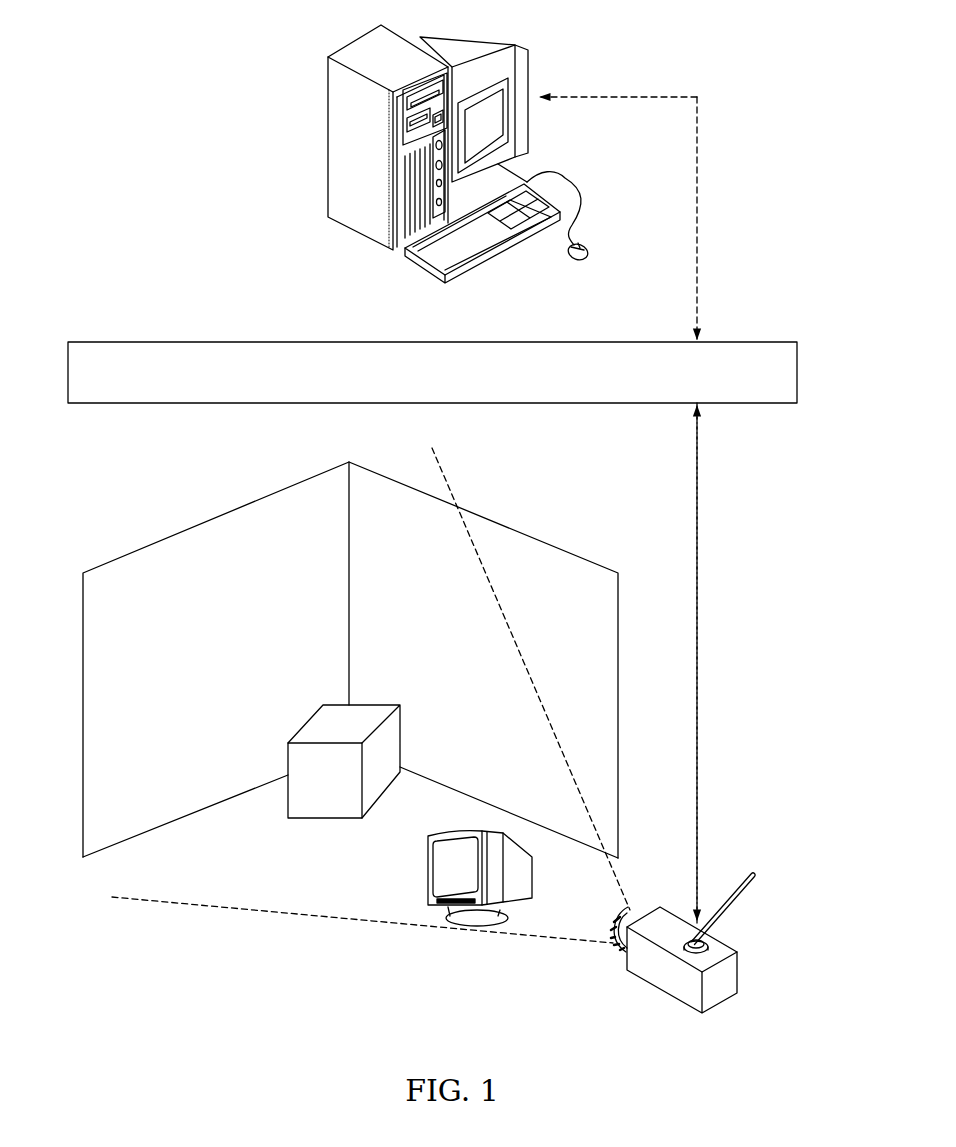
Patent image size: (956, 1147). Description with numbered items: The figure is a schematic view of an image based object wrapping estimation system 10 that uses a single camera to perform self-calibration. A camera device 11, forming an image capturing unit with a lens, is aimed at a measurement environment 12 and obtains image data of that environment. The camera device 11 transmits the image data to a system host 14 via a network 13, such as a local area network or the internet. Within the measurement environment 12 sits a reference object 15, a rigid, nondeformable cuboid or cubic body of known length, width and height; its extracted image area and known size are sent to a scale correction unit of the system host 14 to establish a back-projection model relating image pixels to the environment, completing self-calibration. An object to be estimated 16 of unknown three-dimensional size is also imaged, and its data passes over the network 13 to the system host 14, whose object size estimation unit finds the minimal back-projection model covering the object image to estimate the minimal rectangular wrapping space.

The image based object wrapping estimation system 10 is at (201, 197).
The camera device 11 is at (651, 967).
The measurement environment 12 is at (457, 609).
The network 13 is at (219, 352).
The system host 14 is at (354, 145).
The reference object 15 is at (329, 775).
The object to be estimated 16 is at (442, 880).